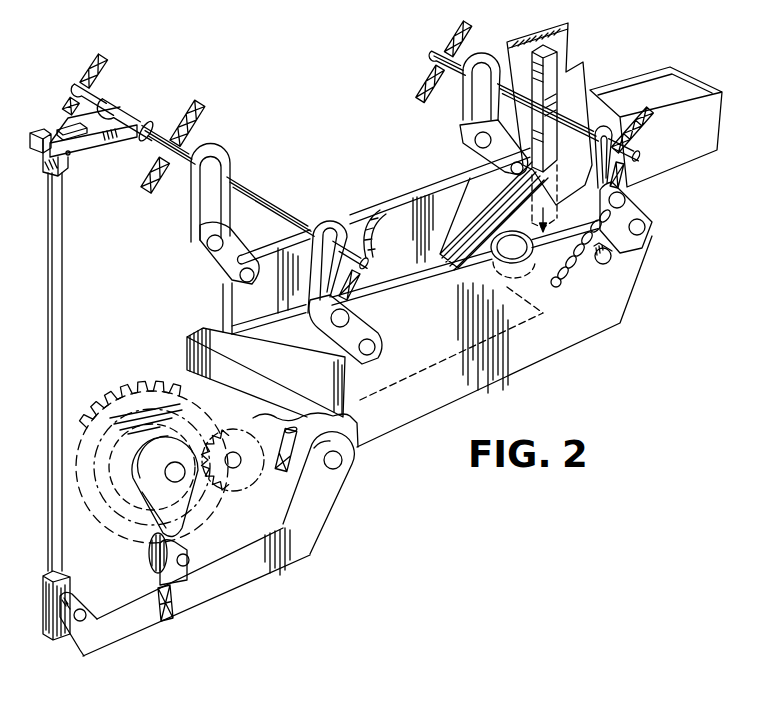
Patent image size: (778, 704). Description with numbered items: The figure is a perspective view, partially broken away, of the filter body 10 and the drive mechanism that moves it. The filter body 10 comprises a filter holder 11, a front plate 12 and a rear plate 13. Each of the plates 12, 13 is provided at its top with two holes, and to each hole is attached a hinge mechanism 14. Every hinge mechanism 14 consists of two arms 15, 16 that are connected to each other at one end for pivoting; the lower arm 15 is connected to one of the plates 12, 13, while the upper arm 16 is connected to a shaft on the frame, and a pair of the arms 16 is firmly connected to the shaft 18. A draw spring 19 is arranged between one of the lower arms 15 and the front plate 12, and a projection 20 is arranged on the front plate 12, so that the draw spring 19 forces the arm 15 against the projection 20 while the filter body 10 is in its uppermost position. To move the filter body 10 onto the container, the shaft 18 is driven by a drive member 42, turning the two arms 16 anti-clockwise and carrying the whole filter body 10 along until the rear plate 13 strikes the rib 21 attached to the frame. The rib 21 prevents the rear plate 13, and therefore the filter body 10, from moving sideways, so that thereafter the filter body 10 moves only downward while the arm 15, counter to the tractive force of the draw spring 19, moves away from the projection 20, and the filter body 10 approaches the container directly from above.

The filter body 10 is at (437, 304).
The filter holder 11 is at (278, 348).
The front plate 12 is at (492, 388).
The rear plate 13 is at (281, 244).
The hinge mechanism 14 is at (395, 247).
The arm 15 is at (224, 264).
The arm 16 is at (194, 197).
The shaft 18 is at (257, 196).
The draw spring 19 is at (585, 275).
The projection 20 is at (611, 258).
The rib 21 is at (574, 75).
The drive member 42 is at (277, 586).